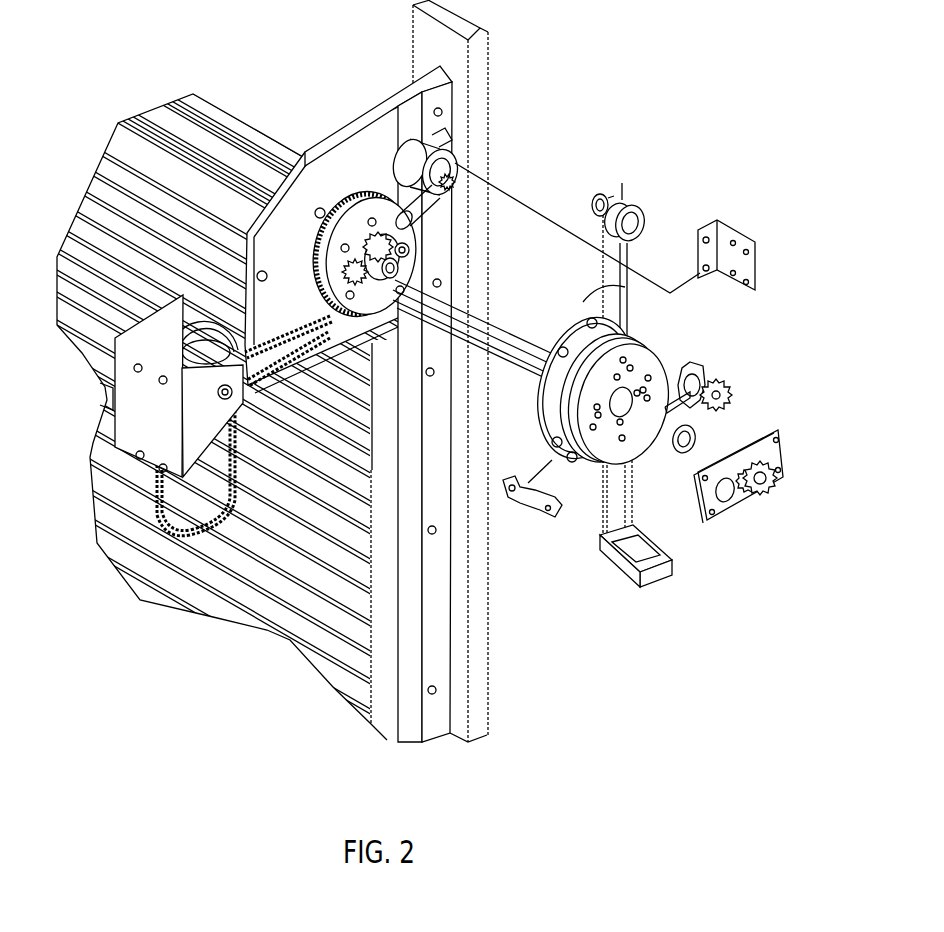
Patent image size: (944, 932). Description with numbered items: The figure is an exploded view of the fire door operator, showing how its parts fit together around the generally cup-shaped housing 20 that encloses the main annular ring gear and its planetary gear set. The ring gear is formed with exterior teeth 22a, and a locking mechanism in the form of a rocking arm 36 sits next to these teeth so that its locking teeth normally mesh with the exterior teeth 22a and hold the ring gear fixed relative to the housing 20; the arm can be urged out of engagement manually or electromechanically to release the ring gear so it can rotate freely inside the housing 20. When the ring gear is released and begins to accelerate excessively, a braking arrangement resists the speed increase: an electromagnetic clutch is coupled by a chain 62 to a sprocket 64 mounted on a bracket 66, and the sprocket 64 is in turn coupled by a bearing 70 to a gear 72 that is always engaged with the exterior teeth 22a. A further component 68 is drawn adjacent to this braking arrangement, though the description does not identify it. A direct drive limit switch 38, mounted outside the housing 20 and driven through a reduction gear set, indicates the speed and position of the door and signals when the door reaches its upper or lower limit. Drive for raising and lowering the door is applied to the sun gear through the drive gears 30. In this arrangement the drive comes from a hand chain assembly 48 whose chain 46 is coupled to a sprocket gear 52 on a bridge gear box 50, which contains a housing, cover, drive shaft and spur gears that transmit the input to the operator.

The housing 20 is at (578, 462).
The exterior teeth 22a is at (363, 193).
The drive gears 30 is at (350, 257).
The rocking arm 36 is at (522, 510).
The direct drive limit switch 38 is at (668, 574).
The chain 46 is at (277, 380).
The hand chain assembly 48 is at (145, 460).
The bridge gear box 50 is at (783, 445).
The sprocket gear 52 is at (770, 487).
The chain 62 is at (432, 197).
The sprocket 64 is at (731, 390).
The bracket 66 is at (705, 358).
The motor 68 is at (412, 160).
The bearing 70 is at (636, 205).
The gear 72 is at (600, 192).